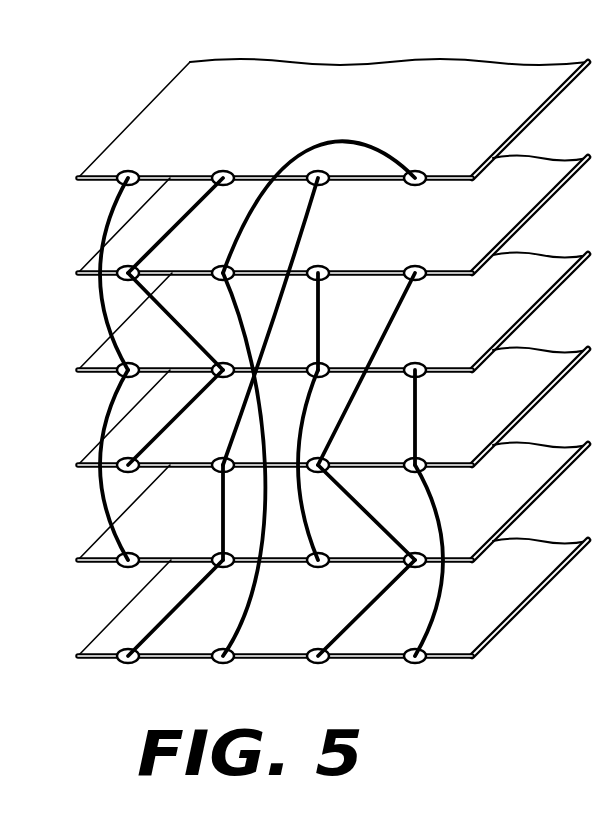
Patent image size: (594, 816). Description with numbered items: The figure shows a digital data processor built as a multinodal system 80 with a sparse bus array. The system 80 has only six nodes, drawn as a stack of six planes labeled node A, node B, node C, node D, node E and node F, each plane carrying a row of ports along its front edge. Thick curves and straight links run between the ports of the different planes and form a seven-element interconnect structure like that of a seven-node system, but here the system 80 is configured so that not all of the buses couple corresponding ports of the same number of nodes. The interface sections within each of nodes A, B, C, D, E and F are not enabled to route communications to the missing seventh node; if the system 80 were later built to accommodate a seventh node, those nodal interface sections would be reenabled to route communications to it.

The multinodal system 80 is at (320, 361).
The node A is at (432, 103).
The node B is at (492, 207).
The node C is at (500, 295).
The node D is at (505, 388).
The node E is at (507, 483).
The node F is at (512, 571).